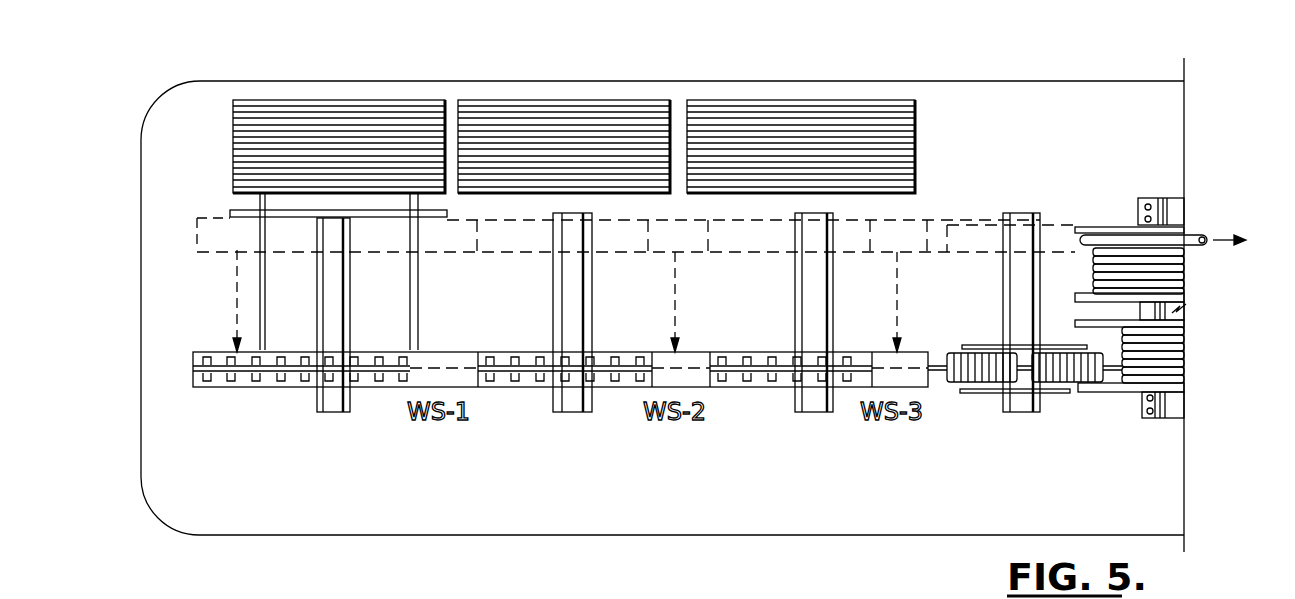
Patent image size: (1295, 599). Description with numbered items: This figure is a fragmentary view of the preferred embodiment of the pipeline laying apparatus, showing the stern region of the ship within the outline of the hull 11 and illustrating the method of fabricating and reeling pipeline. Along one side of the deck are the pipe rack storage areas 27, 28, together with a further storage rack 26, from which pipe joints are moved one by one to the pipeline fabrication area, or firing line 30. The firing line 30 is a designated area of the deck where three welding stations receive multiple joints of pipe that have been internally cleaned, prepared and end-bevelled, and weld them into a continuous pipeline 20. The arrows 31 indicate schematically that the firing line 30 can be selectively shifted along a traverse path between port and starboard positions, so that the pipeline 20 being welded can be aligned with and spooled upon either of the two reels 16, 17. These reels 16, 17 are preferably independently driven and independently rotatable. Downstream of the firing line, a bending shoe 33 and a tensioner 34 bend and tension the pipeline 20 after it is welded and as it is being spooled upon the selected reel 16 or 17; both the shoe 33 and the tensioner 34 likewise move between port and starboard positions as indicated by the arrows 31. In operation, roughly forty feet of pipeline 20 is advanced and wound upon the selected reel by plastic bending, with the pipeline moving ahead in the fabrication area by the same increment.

The hull 11 is at (500, 81).
The reel 16 is at (1110, 227).
The reel 17 is at (1116, 393).
The pipeline 20 is at (1190, 237).
The first processing unit 26 is at (345, 118).
The pipe rack storage area 27 is at (605, 118).
The pipe rack storage area 28 is at (828, 122).
The firing line 30 is at (212, 214).
The arrows 31 is at (233, 287).
The bending shoe 33 is at (1066, 392).
The tensioner 34 is at (965, 352).